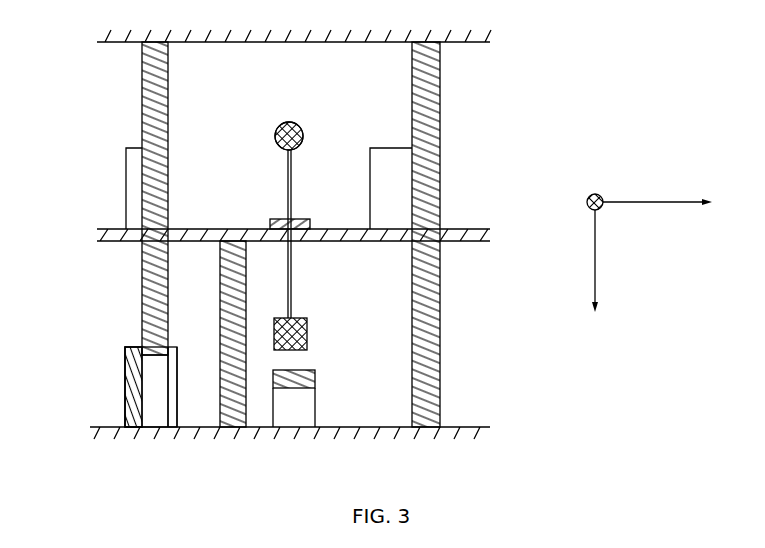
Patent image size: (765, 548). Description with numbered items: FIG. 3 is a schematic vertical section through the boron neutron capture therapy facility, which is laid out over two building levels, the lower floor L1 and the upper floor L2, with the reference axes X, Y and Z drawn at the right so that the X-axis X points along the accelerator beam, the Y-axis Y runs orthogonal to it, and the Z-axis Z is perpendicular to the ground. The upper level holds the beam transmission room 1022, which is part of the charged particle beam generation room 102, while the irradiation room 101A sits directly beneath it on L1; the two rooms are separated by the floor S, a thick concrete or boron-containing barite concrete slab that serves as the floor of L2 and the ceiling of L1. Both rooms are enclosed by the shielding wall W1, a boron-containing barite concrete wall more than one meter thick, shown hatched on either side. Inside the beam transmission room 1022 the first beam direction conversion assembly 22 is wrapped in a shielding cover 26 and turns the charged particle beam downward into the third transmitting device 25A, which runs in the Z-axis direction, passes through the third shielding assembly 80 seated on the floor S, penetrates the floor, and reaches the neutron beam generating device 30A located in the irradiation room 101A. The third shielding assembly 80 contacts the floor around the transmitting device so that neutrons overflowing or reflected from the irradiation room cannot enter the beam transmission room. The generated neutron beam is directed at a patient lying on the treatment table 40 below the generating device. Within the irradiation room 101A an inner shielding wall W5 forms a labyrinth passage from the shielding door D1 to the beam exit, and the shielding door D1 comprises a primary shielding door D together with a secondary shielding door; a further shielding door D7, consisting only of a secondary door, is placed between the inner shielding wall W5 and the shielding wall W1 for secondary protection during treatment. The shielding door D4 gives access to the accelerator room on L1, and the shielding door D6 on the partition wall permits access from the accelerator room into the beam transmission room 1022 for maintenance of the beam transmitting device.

The beam transmission room 1022 is at (407, 77).
The charged particle beam generation room 102 is at (412, 106).
The irradiation room 101A is at (407, 276).
The shielding cover 26 is at (300, 126).
The first beam direction conversion assembly 22 is at (303, 136).
The third transmitting device 25A is at (293, 196).
The third shielding assembly 80 is at (278, 222).
The neutron beam generating device 30A is at (312, 342).
The treatment table 40 is at (318, 382).
The shielding wall W1 is at (150, 122).
The inner shielding wall W5 is at (226, 312).
The floor S is at (113, 243).
The floor (lower level) L1 is at (519, 358).
The floor (upper level) L2 is at (519, 162).
The primary shielding door D is at (125, 360).
The shielding door D1 is at (115, 346).
The shielding door D4 is at (125, 182).
The shielding door D6 is at (394, 186).
The shielding door D7 is at (178, 352).
The X-axis X is at (587, 198).
The Y-axis Y is at (667, 203).
The Z-axis Z is at (595, 275).